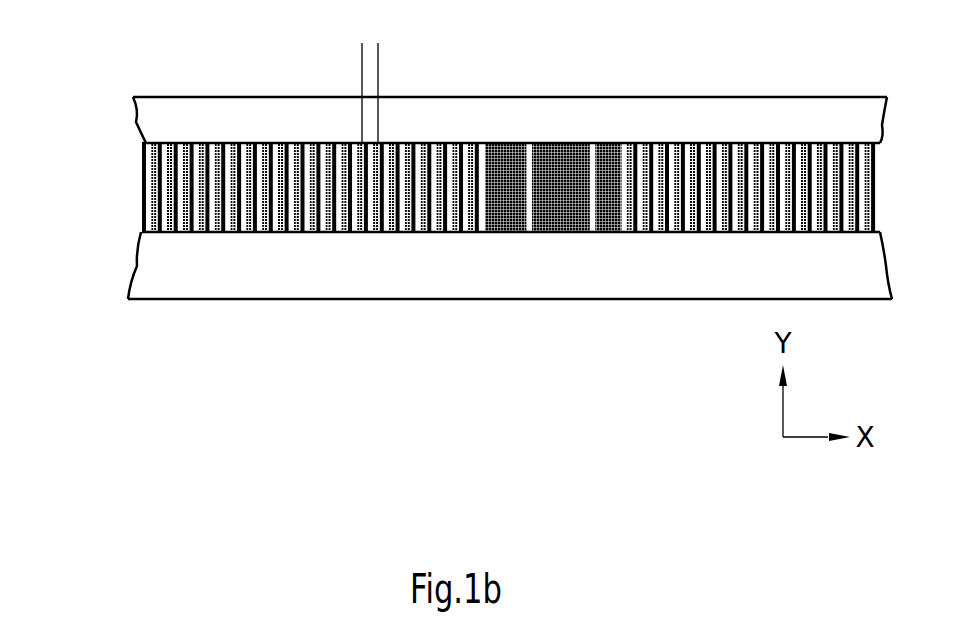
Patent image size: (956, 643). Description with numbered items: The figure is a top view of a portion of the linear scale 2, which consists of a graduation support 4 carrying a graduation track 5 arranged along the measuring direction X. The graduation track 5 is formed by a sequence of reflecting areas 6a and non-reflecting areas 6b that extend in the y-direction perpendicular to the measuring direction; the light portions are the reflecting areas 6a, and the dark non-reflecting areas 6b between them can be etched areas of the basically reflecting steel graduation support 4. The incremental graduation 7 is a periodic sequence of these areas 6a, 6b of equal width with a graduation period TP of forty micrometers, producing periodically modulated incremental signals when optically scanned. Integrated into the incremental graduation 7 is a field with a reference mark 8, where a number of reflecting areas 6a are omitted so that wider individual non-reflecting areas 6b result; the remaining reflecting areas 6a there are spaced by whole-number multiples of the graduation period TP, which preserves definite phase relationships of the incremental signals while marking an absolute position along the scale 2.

The linear scale 2 is at (102, 241).
The graduation support 4 is at (200, 288).
The graduation track 5 is at (473, 243).
The reflecting areas 6a is at (191, 147).
The non-reflecting areas 6b is at (260, 143).
The incremental graduation 7 is at (143, 243).
The reference mark 8 is at (474, 236).
The graduation period TP is at (316, 52).